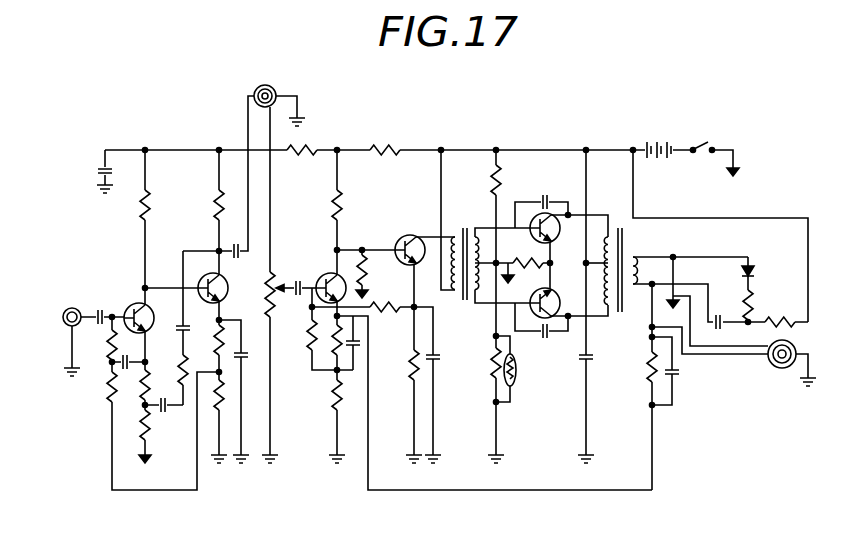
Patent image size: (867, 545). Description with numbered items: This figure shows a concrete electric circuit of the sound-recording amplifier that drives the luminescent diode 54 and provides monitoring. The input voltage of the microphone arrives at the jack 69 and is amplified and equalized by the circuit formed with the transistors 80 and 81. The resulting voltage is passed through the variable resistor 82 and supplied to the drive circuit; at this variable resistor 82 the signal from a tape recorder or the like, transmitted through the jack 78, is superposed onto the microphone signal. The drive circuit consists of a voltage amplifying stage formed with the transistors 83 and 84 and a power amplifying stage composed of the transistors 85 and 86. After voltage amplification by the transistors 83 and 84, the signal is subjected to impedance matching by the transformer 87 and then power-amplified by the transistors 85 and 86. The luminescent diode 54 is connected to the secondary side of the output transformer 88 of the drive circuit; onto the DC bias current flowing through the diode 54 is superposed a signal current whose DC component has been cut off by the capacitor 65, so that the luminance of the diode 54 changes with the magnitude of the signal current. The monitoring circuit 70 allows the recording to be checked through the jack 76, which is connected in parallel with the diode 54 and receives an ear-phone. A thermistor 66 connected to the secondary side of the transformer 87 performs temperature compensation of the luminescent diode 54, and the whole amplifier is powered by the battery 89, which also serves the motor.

The luminescent diode 54 is at (753, 272).
The capacitor 65 is at (719, 312).
The thermistor 66 is at (516, 382).
The jack 69 is at (63, 320).
The monitoring circuit 70 is at (710, 347).
The monitoring jack 76 is at (771, 367).
The jack 78 is at (272, 84).
The transistor 80 is at (132, 306).
The transistor 81 is at (228, 292).
The variable resistor 82 is at (276, 318).
The transistor 83 is at (318, 283).
The transistor 84 is at (407, 236).
The transistor 85 is at (553, 212).
The transistor 86 is at (545, 320).
The transformer 87 is at (462, 298).
The output transformer 88 is at (612, 224).
The battery 89 is at (661, 158).